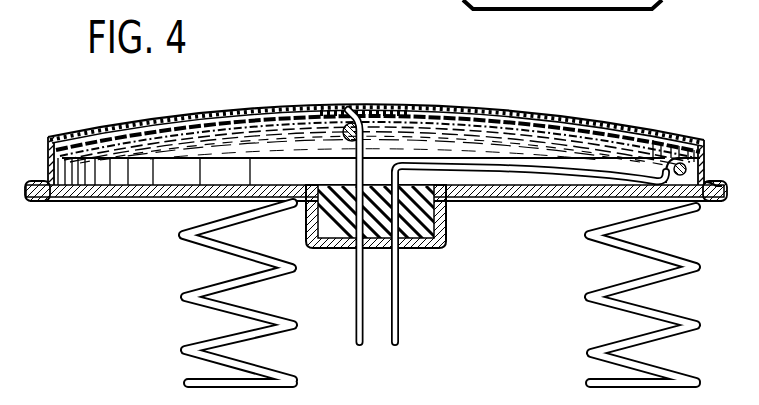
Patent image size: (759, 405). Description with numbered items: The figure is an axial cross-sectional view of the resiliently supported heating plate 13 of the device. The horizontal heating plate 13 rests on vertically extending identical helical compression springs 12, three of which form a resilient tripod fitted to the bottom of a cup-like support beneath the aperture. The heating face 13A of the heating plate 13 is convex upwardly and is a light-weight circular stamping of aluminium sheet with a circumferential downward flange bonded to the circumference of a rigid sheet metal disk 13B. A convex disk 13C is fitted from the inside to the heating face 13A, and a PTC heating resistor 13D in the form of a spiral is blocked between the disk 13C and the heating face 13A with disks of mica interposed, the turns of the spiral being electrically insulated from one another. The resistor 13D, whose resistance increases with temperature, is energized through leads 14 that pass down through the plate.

The helical compression springs 12 is at (183, 294).
The heating plate 13 is at (376, 161).
The heating face 13A is at (480, 108).
The rigid sheet metal disk 13B is at (484, 200).
The convex disk 13C is at (157, 142).
The PTC heating resistor 13D is at (336, 104).
The leads 14 is at (371, 324).